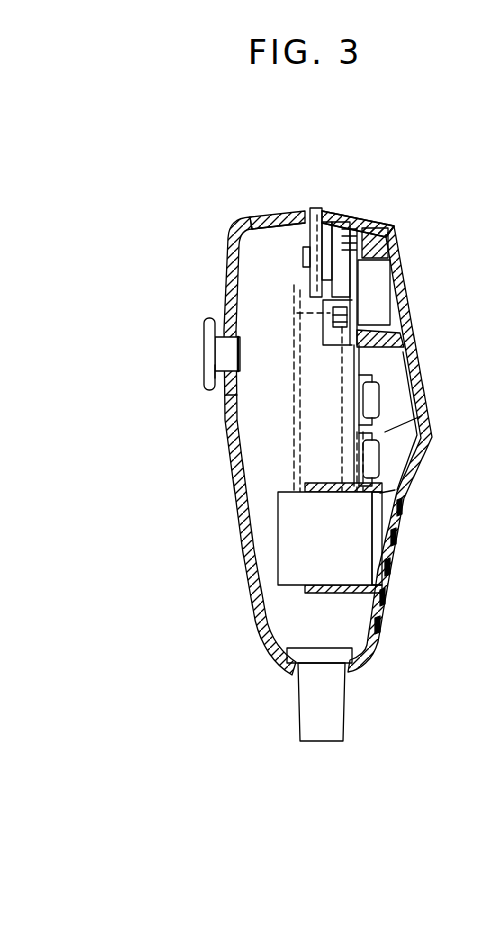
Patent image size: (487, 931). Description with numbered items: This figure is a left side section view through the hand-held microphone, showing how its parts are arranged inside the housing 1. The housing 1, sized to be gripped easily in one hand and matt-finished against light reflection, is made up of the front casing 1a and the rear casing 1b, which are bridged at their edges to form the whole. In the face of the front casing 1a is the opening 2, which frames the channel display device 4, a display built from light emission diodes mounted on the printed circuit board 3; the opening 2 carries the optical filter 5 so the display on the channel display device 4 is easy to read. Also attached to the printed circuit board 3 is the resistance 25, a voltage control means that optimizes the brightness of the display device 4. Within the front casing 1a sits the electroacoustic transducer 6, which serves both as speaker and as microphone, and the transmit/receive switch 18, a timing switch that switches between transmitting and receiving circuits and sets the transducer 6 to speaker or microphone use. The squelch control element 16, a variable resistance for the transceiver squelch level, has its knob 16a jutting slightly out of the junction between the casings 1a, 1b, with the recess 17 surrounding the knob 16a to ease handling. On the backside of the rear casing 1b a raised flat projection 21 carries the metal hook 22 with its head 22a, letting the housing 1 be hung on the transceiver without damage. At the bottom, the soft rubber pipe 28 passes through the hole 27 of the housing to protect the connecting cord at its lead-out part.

The housing 1 is at (288, 196).
The front casing 1a is at (371, 225).
The rear casing 1b is at (228, 262).
The opening 2 is at (390, 241).
The printed circuit board 3 is at (410, 358).
The channel display device 4 is at (380, 293).
The optical filter 5 is at (410, 318).
The electroacoustic transducer 6 is at (290, 575).
The squelch control element 16 is at (331, 246).
The knob 16a is at (300, 211).
The recess 17 is at (312, 209).
The transmit/receive switch 18 is at (345, 343).
The flat projection 21 is at (222, 396).
The metal hook 22 is at (212, 348).
The head 22a is at (212, 376).
The resistance 25 is at (378, 400).
The hole 27 is at (370, 665).
The pipe 28 is at (340, 713).